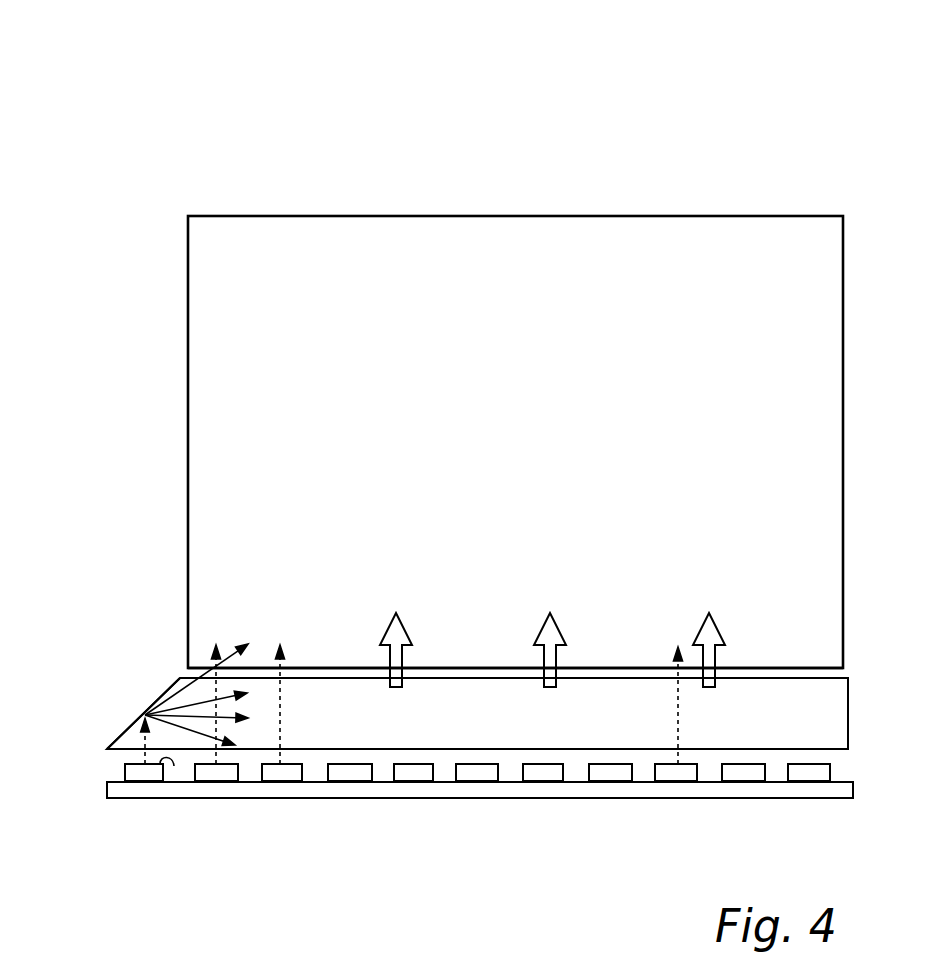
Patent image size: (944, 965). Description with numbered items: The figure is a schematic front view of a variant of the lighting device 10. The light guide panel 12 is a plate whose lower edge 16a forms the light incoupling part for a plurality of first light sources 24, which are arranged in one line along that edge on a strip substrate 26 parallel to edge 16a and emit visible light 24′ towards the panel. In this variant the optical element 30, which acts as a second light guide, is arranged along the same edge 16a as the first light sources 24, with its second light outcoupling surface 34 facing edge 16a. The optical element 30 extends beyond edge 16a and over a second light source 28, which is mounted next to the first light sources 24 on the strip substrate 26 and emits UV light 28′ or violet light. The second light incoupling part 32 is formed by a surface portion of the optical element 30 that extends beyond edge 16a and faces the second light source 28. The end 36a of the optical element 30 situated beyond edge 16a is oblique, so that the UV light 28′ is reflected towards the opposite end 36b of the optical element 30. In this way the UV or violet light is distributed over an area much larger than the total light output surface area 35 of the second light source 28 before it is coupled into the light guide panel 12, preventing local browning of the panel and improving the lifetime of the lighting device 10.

The lighting device 10 is at (725, 170).
The light guide panel 12 is at (853, 225).
The edge 16a is at (577, 668).
The first light sources 24 is at (399, 772).
The visible light 24′ is at (283, 688).
The strip substrate 26 is at (262, 790).
The second light source 28 is at (135, 773).
The UV light 28′ is at (143, 757).
The optical element 30 is at (567, 726).
The second light incoupling part 32 is at (120, 740).
The second light outcoupling surface 34 is at (485, 678).
The total light output surface area 35 is at (174, 766).
The end of the optical element 36a is at (145, 715).
The opposite end of the optical element 36b is at (848, 718).